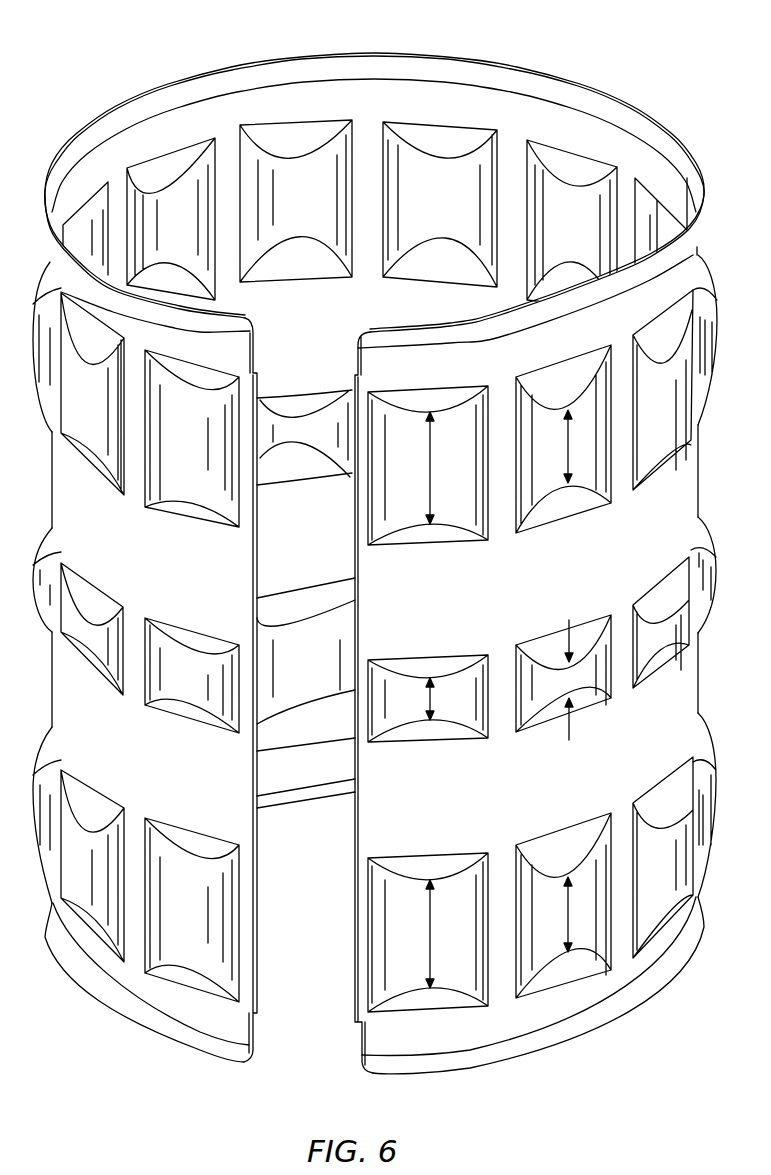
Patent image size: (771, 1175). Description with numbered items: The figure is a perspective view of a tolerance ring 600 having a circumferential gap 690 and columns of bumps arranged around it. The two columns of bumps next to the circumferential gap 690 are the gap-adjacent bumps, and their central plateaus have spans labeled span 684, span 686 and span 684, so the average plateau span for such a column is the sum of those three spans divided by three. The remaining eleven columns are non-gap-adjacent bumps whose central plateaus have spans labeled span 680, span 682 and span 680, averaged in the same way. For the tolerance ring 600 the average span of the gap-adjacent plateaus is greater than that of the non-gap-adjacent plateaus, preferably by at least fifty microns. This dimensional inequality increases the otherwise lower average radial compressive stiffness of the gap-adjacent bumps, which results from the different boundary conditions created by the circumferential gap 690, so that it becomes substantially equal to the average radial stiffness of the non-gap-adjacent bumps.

The tolerance ring 600 is at (140, 65).
The span of central plateau of non-gap-adjacent bump 680 is at (568, 459).
The span of central plateau of non-gap-adjacent bump 682 is at (572, 740).
The span of central plateau of gap-adjacent bump 684 is at (432, 496).
The span of central plateau of gap-adjacent bump 686 is at (433, 728).
The circumferential gap 690 is at (305, 1022).